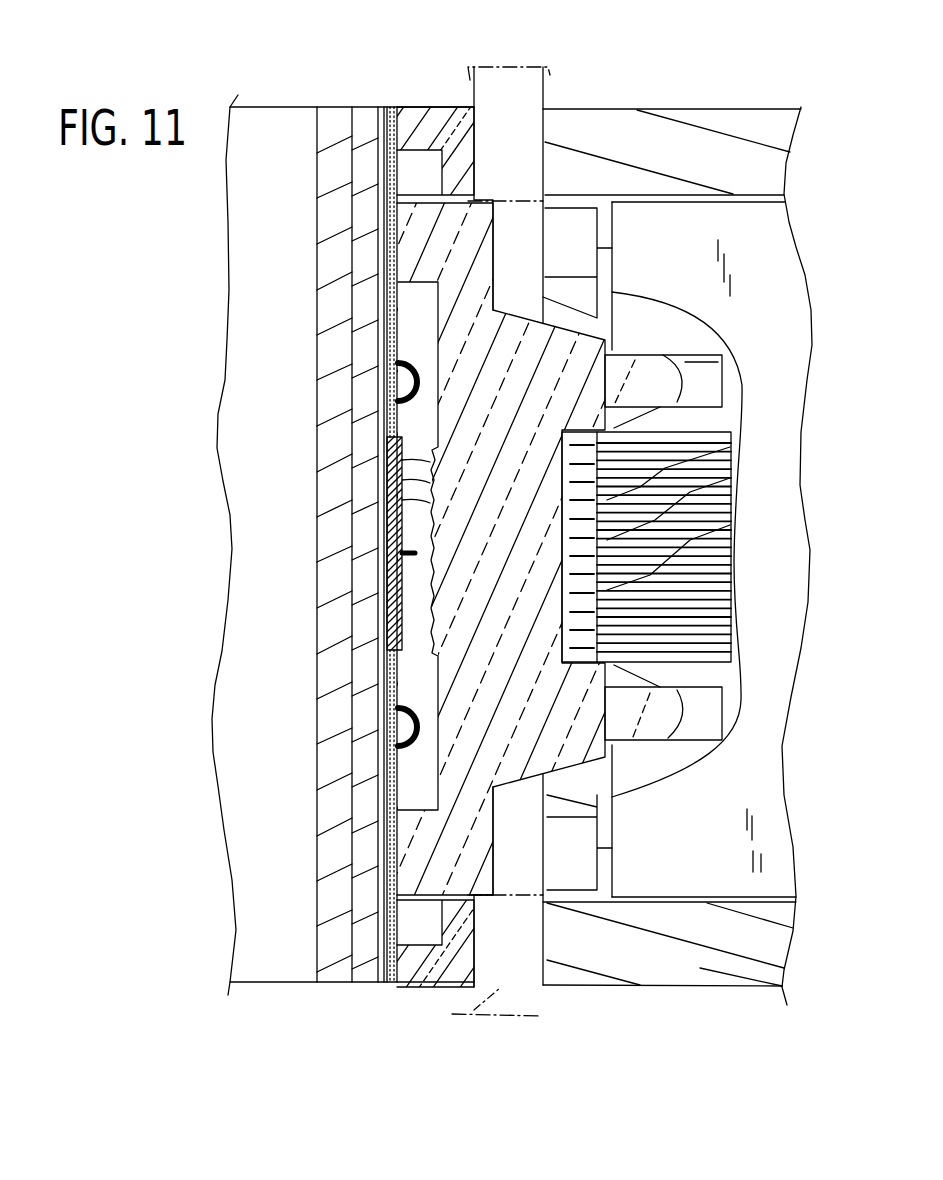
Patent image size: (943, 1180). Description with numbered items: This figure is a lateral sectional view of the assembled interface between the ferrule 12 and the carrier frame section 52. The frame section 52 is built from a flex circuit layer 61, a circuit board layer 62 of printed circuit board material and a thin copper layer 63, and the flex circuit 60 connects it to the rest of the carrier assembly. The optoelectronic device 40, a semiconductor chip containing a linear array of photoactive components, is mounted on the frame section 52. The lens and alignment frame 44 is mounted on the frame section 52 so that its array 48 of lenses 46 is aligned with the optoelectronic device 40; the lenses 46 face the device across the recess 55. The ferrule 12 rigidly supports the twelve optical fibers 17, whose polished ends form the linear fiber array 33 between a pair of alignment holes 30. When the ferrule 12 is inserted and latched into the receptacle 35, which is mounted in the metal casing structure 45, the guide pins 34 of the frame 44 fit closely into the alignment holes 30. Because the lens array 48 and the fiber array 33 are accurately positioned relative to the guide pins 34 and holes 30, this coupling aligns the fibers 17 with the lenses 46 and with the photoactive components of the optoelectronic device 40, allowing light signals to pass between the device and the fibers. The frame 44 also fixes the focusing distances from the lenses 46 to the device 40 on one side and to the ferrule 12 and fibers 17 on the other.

The ferrule 12 is at (798, 247).
The optical communications fibers 17 is at (730, 470).
The alignment holes 30 is at (695, 355).
The fiber array 33 is at (740, 512).
The guide pins 34 is at (650, 357).
The receptacle 35 is at (656, 109).
The optoelectronic device 40 is at (387, 527).
The lens and alignment frame 44 is at (440, 105).
The metal casing structure 45 is at (518, 97).
The lenses 46 is at (430, 502).
The lens array 48 is at (425, 602).
The carrier frame section 52 is at (337, 538).
The recess 55 is at (431, 350).
The flex circuit 60 is at (293, 302).
The flex circuit layer 61 is at (380, 985).
The circuit board layer 62 is at (362, 985).
The copper layer 63 is at (335, 983).